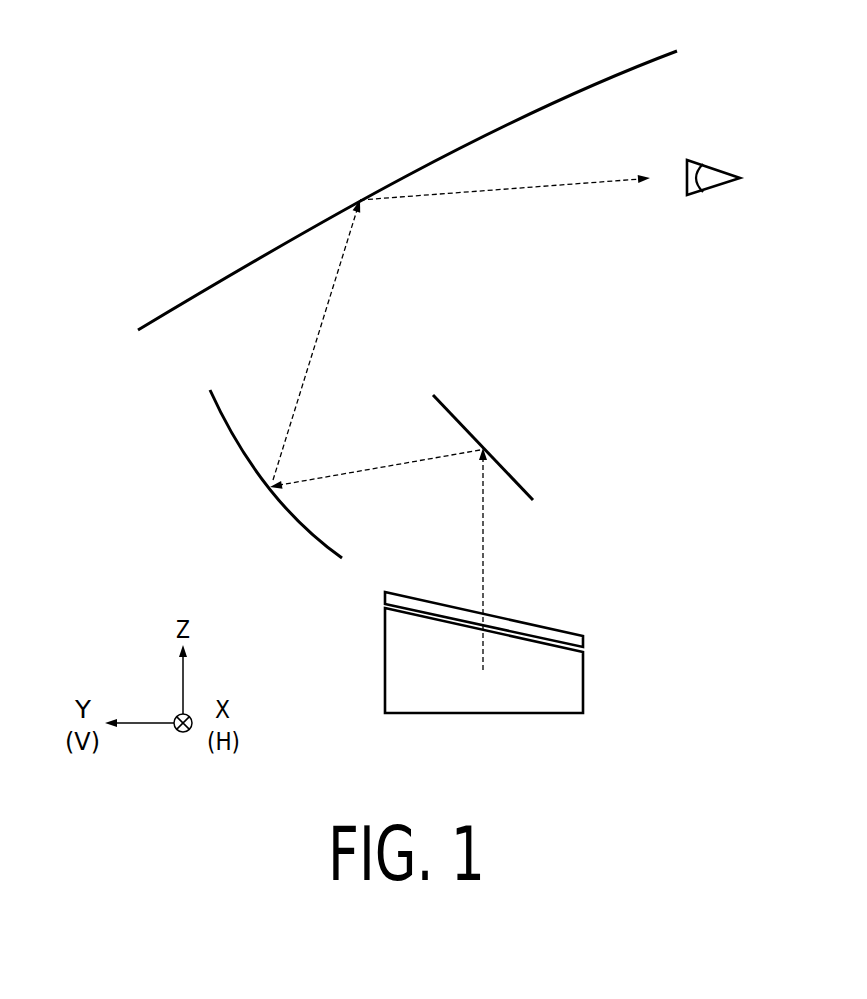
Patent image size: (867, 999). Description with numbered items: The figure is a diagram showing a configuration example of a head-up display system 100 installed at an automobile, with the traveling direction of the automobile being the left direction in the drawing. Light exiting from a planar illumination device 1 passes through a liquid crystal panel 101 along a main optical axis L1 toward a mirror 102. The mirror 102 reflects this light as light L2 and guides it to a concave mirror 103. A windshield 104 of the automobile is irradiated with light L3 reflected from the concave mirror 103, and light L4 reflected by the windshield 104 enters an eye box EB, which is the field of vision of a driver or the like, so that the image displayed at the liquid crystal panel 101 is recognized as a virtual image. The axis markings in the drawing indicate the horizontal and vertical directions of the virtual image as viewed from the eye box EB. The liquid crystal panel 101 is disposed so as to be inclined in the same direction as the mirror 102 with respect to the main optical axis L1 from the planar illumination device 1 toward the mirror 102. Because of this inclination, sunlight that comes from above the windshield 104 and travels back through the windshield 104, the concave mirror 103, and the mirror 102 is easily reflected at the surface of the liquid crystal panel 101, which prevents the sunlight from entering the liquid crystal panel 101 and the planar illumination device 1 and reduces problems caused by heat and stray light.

The head-up display system 100 is at (248, 62).
The planar illumination device 1 is at (584, 687).
The liquid crystal panel 101 is at (580, 635).
The mirror 102 is at (462, 425).
The concave mirror 103 is at (230, 431).
The windshield 104 is at (433, 158).
The main optical axis L1 is at (488, 542).
The light reflected by the mirror L2 is at (395, 466).
The light reflected from the concave mirror L3 is at (323, 318).
The light reflected by the windshield L4 is at (535, 182).
The eye box EB is at (720, 167).